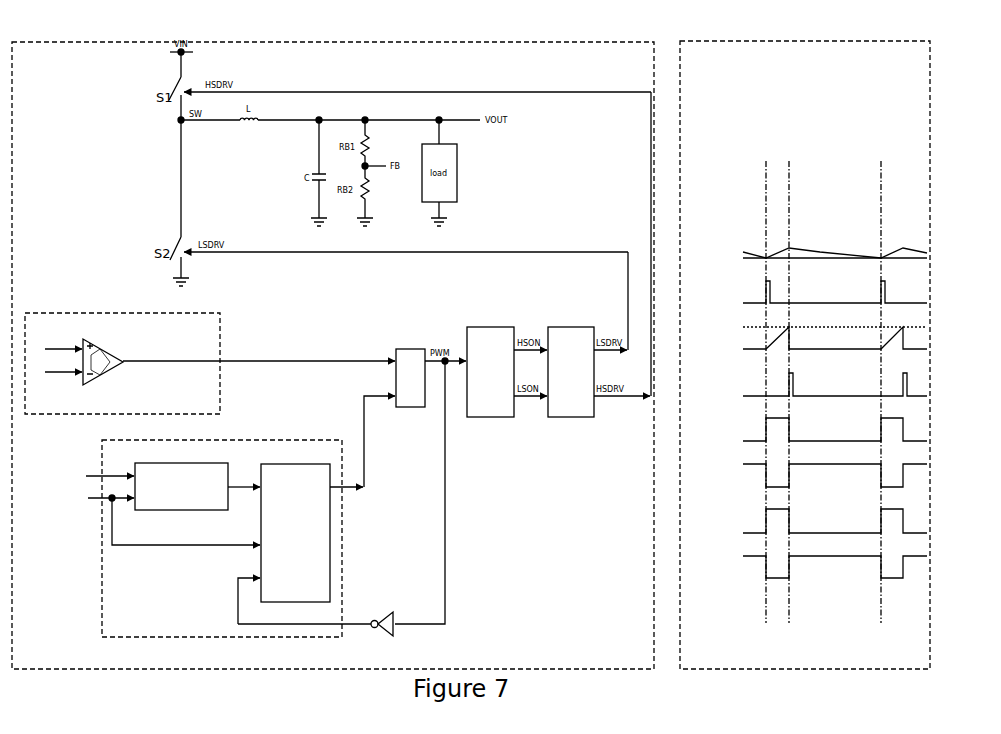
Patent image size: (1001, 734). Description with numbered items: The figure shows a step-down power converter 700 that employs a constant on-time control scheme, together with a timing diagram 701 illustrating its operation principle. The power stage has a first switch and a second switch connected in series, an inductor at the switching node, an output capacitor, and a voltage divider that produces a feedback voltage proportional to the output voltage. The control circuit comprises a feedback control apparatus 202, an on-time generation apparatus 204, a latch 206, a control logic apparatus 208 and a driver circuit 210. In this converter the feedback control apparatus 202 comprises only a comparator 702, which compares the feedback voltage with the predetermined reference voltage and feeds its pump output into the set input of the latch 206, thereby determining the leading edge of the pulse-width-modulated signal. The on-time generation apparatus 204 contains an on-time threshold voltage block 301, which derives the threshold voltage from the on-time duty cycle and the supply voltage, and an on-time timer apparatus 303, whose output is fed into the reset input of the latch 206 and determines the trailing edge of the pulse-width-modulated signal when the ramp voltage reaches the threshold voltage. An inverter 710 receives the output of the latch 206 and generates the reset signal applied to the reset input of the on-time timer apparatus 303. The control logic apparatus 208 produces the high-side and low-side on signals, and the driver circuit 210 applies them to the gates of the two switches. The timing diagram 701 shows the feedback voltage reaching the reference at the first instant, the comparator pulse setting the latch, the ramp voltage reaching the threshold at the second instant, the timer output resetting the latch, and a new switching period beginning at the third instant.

The step-down power converter 700 is at (333, 355).
The timing diagram 701 is at (805, 355).
The comparator 702 is at (104, 342).
The feedback control apparatus 202 is at (122, 363).
The on-time generation apparatus 204 is at (204, 538).
The latch 206 is at (413, 407).
The control logic apparatus 208 is at (492, 417).
The driver circuit 210 is at (572, 417).
The on-time threshold voltage apparatus 301 is at (177, 510).
The on-time timer apparatus 303 is at (295, 533).
The inverter 710 is at (386, 634).